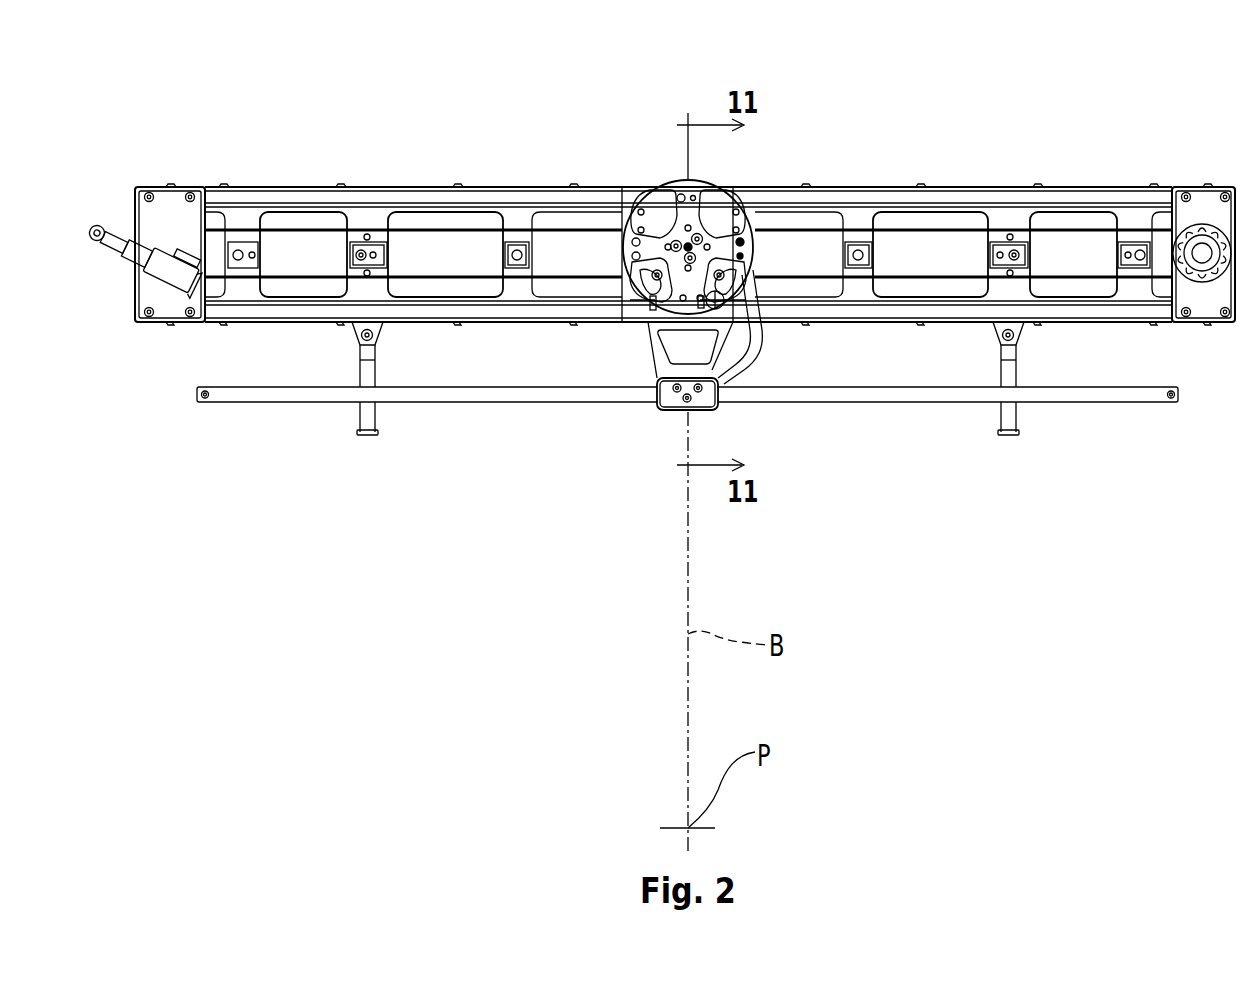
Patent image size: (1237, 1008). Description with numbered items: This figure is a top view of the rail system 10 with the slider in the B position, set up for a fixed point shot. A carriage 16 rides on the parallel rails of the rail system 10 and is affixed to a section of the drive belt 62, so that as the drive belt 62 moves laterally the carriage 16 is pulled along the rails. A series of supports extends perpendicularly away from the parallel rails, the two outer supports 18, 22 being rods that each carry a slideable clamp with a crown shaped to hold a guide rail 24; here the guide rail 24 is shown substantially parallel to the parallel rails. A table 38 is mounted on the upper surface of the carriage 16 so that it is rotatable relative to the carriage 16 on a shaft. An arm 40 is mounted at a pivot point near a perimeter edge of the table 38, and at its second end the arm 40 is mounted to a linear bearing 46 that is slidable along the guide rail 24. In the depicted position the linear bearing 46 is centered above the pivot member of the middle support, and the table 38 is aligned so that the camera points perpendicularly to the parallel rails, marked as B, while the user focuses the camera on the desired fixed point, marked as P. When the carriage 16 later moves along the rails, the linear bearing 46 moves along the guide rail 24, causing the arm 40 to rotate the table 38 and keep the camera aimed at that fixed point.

The rail system 10 is at (912, 126).
The carriage 16 is at (628, 188).
The outer support 18 is at (358, 417).
The outer support 22 is at (1018, 416).
The guide rail 24 is at (476, 397).
The table 38 is at (672, 181).
The arm 40 is at (765, 352).
The linear bearing 46 is at (665, 412).
The drive belt 62 is at (440, 233).